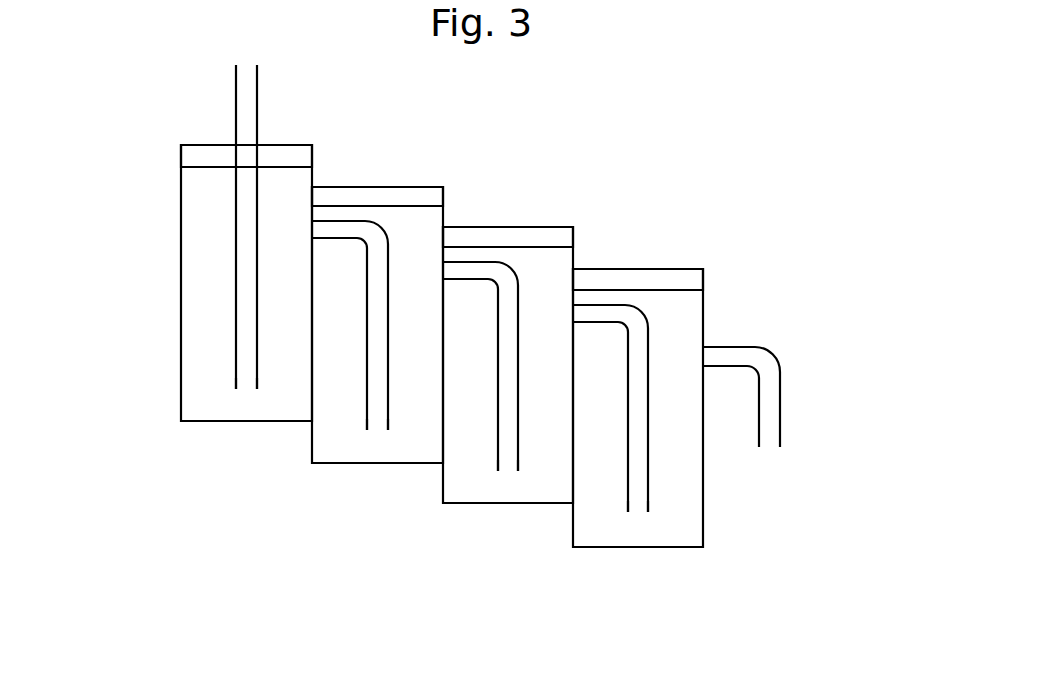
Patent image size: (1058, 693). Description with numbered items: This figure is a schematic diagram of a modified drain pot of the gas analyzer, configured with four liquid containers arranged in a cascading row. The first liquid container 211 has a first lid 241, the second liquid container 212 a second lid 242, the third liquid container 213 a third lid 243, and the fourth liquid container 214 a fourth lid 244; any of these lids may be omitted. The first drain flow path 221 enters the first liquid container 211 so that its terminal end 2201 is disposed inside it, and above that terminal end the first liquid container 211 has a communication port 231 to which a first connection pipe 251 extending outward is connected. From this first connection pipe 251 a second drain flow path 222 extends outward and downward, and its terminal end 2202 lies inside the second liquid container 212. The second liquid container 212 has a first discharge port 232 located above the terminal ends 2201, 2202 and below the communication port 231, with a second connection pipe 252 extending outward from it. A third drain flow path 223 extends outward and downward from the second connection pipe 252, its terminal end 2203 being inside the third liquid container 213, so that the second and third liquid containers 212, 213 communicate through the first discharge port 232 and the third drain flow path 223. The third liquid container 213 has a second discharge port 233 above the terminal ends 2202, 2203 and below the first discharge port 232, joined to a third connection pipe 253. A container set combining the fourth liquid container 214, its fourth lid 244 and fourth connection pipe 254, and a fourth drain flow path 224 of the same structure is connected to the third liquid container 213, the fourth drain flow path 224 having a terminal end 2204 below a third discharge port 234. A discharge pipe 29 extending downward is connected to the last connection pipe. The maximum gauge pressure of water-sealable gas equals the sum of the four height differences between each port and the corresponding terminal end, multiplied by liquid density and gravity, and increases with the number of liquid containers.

The first liquid container 211 is at (215, 272).
The second liquid container 212 is at (345, 383).
The third liquid container 213 is at (538, 460).
The fourth liquid container 214 is at (668, 502).
The first drain flow path 221 is at (247, 222).
The second drain flow path 222 is at (378, 347).
The third drain flow path 223 is at (508, 403).
The fourth drain flow path 224 is at (637, 387).
The communication port 231 is at (312, 226).
The first discharge port 232 is at (443, 264).
The second discharge port 233 is at (573, 313).
The third discharge port 234 is at (702, 355).
The first lid 241 is at (223, 158).
The second lid 242 is at (382, 198).
The third lid 243 is at (520, 237).
The fourth lid 244 is at (653, 277).
The first connection pipe 251 is at (333, 220).
The second connection pipe 252 is at (463, 262).
The third connection pipe 253 is at (593, 303).
The fourth connection pipe 254 is at (725, 347).
The terminal end of the first drain flow path 2201 is at (245, 388).
The terminal end of the second drain flow path 2202 is at (377, 430).
The terminal end of the third drain flow path 2203 is at (510, 467).
The terminal end of the fourth drain flow path 2204 is at (638, 515).
The discharge pipe 29 is at (765, 403).